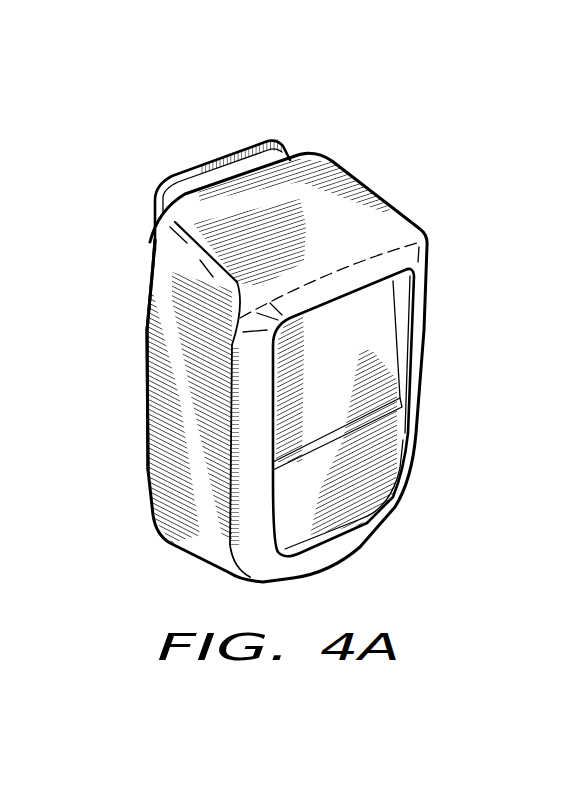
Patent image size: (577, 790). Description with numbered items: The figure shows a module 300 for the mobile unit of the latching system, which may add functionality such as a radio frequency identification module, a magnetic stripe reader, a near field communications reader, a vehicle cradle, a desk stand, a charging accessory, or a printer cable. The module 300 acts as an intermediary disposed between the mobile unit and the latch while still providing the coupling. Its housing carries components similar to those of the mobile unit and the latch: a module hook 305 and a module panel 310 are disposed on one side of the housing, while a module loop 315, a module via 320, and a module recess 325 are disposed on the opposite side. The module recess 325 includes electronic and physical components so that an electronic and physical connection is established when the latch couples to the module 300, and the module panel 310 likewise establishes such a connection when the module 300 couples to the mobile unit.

The module 300 is at (367, 173).
The module hook 305 is at (208, 157).
The module panel 310 is at (152, 213).
The module loop 315 is at (377, 265).
The module via 320 is at (343, 300).
The module recess 325 is at (333, 388).